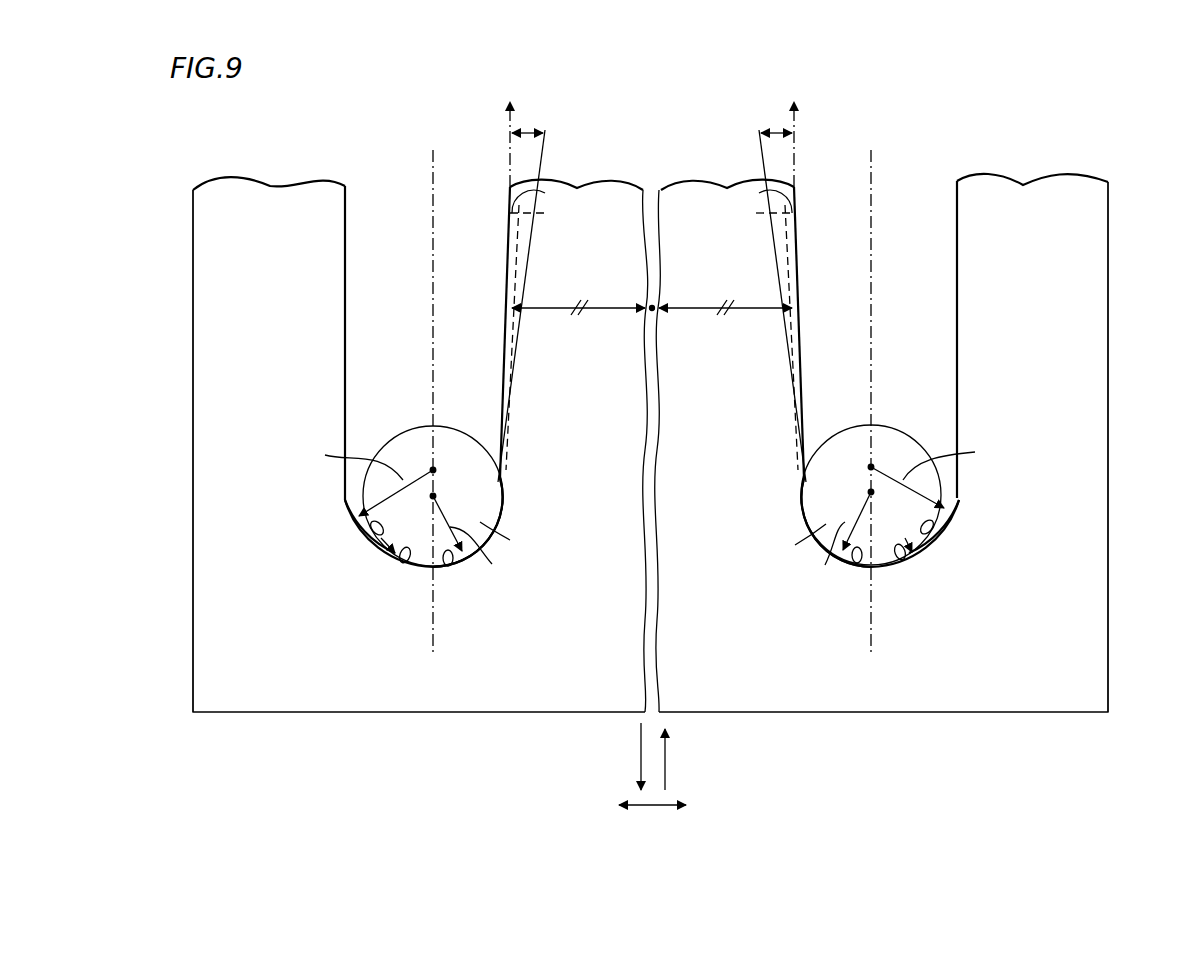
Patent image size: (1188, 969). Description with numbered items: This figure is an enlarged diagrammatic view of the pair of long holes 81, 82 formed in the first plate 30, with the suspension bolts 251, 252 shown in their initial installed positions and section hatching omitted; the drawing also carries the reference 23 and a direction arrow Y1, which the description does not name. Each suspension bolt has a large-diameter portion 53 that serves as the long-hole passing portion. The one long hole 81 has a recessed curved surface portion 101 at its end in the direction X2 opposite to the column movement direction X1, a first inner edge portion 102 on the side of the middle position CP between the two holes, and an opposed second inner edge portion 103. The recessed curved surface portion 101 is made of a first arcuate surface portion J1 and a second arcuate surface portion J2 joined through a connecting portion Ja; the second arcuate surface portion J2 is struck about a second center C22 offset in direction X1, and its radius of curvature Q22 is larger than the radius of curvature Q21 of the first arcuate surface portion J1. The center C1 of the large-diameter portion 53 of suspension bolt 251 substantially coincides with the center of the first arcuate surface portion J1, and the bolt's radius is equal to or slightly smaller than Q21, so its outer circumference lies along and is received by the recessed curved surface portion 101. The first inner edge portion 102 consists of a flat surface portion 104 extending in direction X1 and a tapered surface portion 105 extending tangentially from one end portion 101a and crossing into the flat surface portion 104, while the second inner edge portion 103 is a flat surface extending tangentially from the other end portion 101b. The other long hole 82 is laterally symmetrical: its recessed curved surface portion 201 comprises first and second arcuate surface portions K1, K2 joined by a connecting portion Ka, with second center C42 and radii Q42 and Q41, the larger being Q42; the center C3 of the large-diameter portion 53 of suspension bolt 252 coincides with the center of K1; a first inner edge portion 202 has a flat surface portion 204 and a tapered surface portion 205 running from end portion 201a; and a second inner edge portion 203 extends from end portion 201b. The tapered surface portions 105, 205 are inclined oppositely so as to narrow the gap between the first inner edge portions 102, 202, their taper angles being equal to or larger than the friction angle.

The body 23 is at (1112, 338).
The first plate 30 is at (1108, 252).
The long hole 81 is at (305, 426).
The long hole 82 is at (998, 319).
The second inner edge portion 103 is at (346, 260).
The second inner edge portion 203 is at (957, 252).
The recessed curved surface portion 101 is at (423, 551).
The one end portion 101a is at (503, 500).
The another end portion 101b is at (347, 496).
The recessed curved surface portion 201 is at (882, 551).
The one end portion 201a is at (806, 497).
The another end portion 201b is at (957, 496).
The first inner edge portion 102 is at (506, 225).
The flat surface portion 104 is at (510, 287).
The tapered surface portion 105 is at (507, 424).
The first inner edge portion 202 is at (797, 225).
The flat surface portion 204 is at (794, 287).
The tapered surface portion 205 is at (797, 424).
The suspension bolt 251 is at (411, 423).
The suspension bolt 252 is at (893, 423).
The large-diameter portion 53 is at (653, 541).
The middle position CP is at (652, 306).
The column movement direction X1 is at (510, 155).
The direction opposite to column movement direction X2 is at (640, 752).
The width direction Y1 is at (651, 808).
The second center C22 is at (434, 470).
The center of large-diameter portion C1 is at (434, 496).
The second center C42 is at (870, 467).
The center of large-diameter portion C3 is at (870, 492).
The radius of curvature Q22 is at (341, 462).
The radius of curvature Q21 is at (491, 554).
The radius of curvature Q42 is at (960, 460).
The radius of curvature Q41 is at (815, 556).
The first arcuate surface portion J1 is at (441, 568).
The second arcuate surface portion J2 is at (380, 543).
The connecting portion Ja is at (432, 592).
The first arcuate surface portion K1 is at (862, 566).
The second arcuate surface portion K2 is at (925, 541).
The connecting portion Ka is at (875, 592).